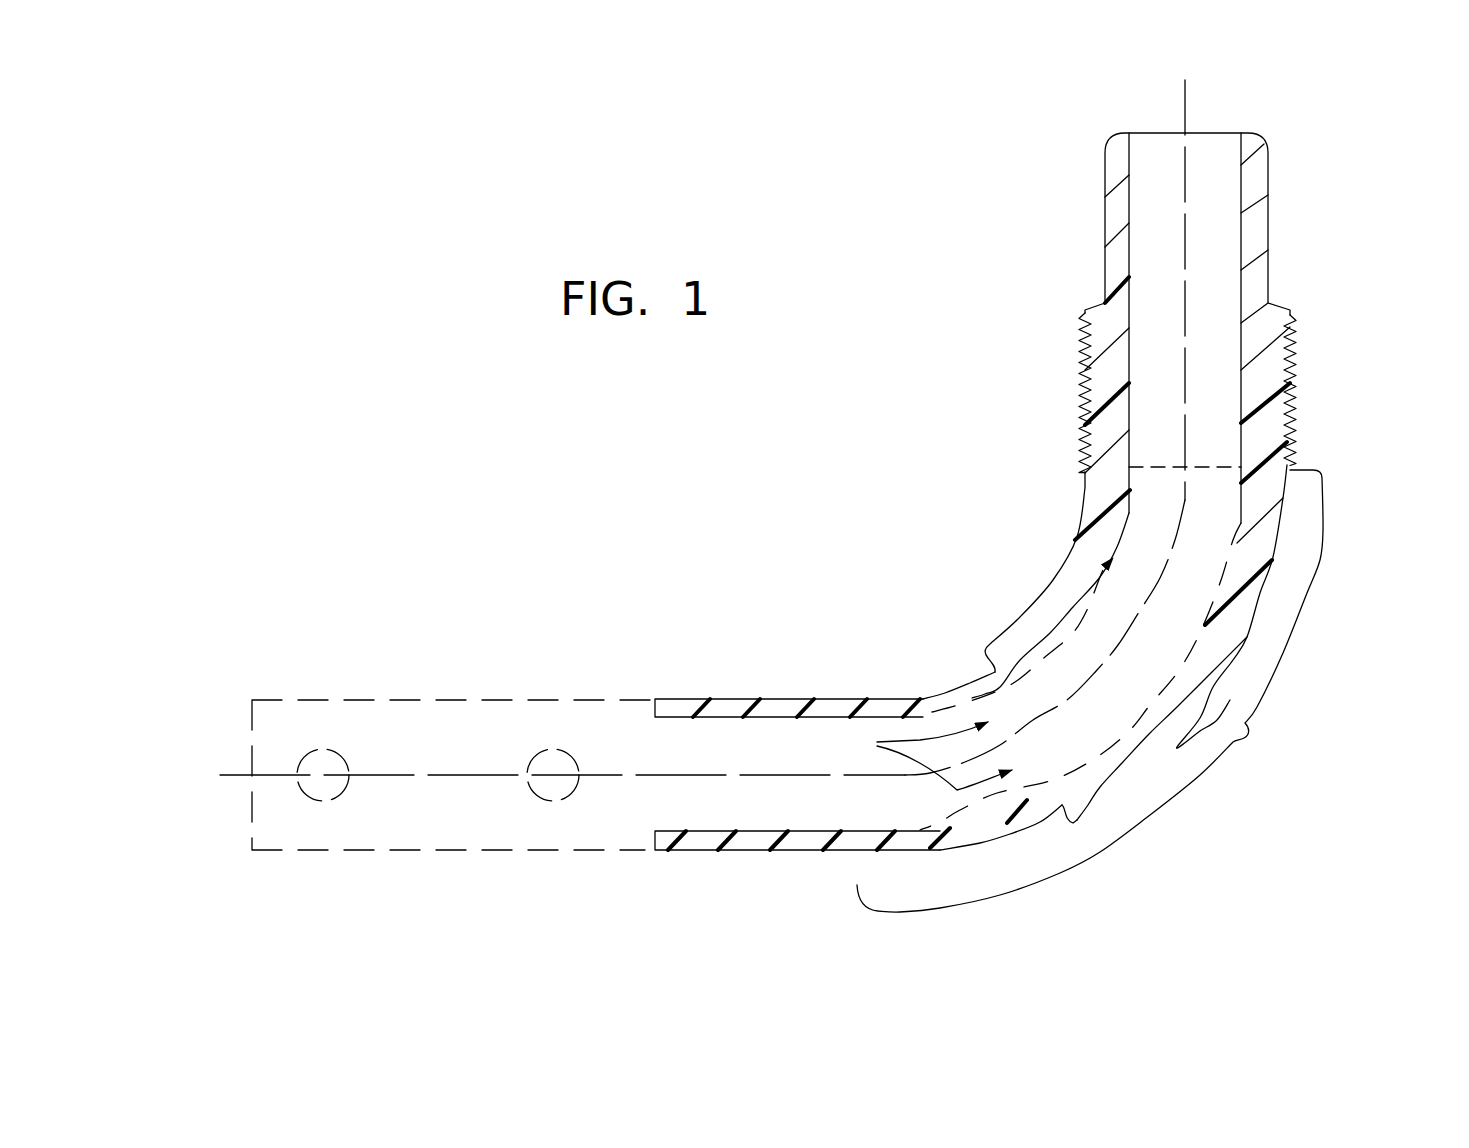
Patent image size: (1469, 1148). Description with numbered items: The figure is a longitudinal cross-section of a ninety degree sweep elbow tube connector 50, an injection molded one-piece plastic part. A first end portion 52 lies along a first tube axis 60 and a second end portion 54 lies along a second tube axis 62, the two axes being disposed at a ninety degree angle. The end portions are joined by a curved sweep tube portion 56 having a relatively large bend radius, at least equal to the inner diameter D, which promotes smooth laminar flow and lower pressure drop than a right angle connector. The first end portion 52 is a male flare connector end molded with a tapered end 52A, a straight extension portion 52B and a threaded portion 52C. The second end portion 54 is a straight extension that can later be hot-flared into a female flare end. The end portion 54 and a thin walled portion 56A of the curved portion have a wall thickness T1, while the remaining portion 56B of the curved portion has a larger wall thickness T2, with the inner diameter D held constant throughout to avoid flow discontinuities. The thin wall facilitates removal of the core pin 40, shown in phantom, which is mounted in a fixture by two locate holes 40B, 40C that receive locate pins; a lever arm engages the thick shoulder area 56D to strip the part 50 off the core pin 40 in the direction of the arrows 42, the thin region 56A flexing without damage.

The core pin 40 is at (428, 700).
The locate hole 40B is at (325, 750).
The locate hole 40C is at (537, 752).
The arrows 42 is at (929, 756).
The sweep elbow tube connector 50 is at (1360, 512).
The first end portion 52 is at (1287, 135).
The tapered end 52A is at (1113, 142).
The straight extension portion 52B is at (1105, 205).
The threaded portion 52C is at (1080, 362).
The second end portion 54 is at (730, 697).
The curved sweep tube portion 56 is at (1087, 688).
The thin walled portion 56A is at (852, 857).
The remaining portion of the curved portion 56B is at (1090, 691).
The thick shoulder area 56D is at (992, 662).
The first tube axis 60 is at (1185, 103).
The second tube axis 62 is at (705, 775).
The inner diameter D is at (777, 828).
The wall thickness T1 is at (852, 800).
The wall thickness T2 is at (1123, 627).